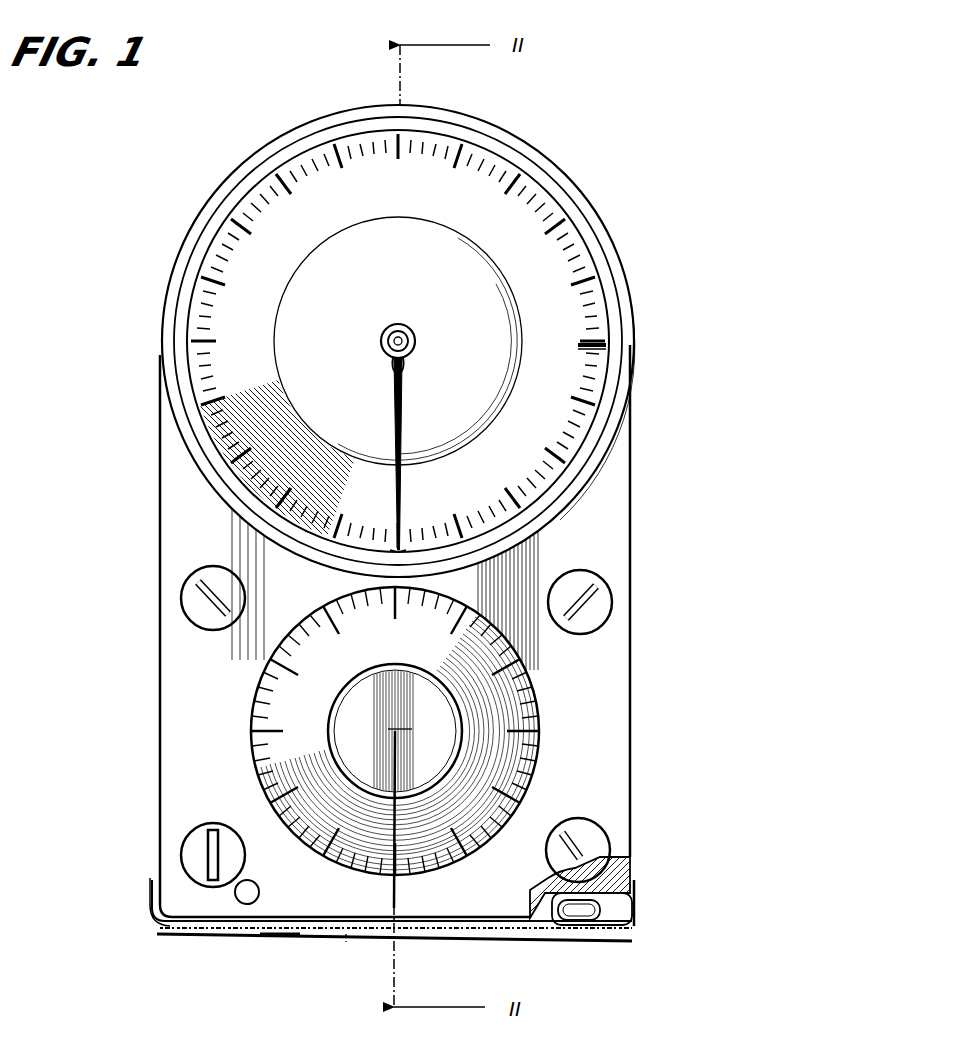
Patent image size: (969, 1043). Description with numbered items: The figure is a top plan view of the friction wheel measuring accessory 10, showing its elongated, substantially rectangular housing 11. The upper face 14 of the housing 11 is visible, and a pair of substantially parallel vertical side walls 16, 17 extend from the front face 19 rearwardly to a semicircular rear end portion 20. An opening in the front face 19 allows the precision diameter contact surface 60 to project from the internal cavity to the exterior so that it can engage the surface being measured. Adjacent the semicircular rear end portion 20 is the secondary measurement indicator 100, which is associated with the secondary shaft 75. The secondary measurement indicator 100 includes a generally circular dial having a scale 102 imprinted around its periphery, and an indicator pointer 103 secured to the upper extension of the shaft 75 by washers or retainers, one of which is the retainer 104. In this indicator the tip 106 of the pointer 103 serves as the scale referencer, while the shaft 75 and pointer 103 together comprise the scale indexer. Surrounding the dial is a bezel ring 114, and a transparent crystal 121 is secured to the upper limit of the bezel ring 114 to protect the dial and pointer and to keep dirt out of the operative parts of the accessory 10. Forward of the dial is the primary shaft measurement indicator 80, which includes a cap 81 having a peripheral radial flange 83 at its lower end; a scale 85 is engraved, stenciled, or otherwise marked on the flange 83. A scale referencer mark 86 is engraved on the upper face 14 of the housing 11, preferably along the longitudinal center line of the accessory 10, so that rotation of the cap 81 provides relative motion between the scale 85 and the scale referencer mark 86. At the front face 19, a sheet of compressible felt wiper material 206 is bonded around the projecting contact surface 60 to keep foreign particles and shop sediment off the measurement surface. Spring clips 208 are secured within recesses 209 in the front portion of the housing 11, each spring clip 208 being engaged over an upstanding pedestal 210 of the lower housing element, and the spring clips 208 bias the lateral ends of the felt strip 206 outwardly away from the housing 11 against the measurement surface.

The accessory 10 is at (150, 220).
The housing 11 is at (614, 240).
The upper face 14 is at (212, 688).
The side wall 16 is at (160, 650).
The side wall 17 is at (630, 650).
The front face 19 is at (243, 931).
The semicircular rear end portion 20 is at (248, 157).
The contact surface 60 is at (352, 936).
The secondary shaft 75 is at (410, 332).
The primary shaft measurement indicator 80 is at (540, 680).
The cap 81 is at (358, 729).
The peripheral radial flange 83 is at (300, 738).
The scale 85 is at (535, 772).
The scale referencer mark 86 is at (393, 885).
The secondary measurement indicator 100 is at (560, 342).
The scale 102 is at (606, 348).
The indicator pointer 103 is at (395, 428).
The retainer 104 is at (388, 348).
The pointer tip 106 is at (396, 548).
The bezel ring 114 is at (556, 168).
The transparent crystal 121 is at (352, 279).
The compressible wiper material 206 is at (283, 934).
The spring clip 208 is at (632, 912).
The recess 209 is at (636, 897).
The pedestal 210 is at (592, 914).